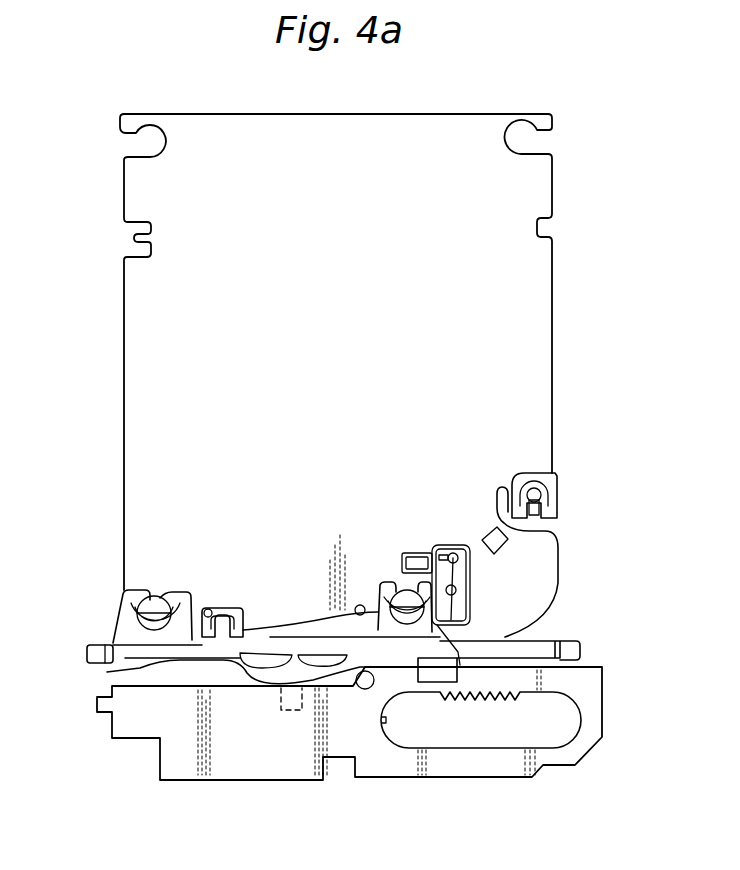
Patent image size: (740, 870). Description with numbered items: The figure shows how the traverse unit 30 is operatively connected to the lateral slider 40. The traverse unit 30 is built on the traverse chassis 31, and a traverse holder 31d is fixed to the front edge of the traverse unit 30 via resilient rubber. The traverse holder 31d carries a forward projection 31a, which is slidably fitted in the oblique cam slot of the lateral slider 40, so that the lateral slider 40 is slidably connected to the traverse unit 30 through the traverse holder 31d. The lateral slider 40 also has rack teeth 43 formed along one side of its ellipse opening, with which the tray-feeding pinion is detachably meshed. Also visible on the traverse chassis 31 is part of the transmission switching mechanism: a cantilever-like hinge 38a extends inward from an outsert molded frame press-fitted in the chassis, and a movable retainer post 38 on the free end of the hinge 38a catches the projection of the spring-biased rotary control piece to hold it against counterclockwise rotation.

The traverse unit 30 is at (560, 384).
The traverse chassis 31 is at (180, 638).
The forward projection 31a is at (280, 693).
The traverse holder 31d is at (130, 662).
The retainer post 38 is at (458, 558).
The cantilever-like hinge 38a is at (456, 590).
The lateral slider 40 is at (608, 688).
The rack teeth 43 is at (472, 693).